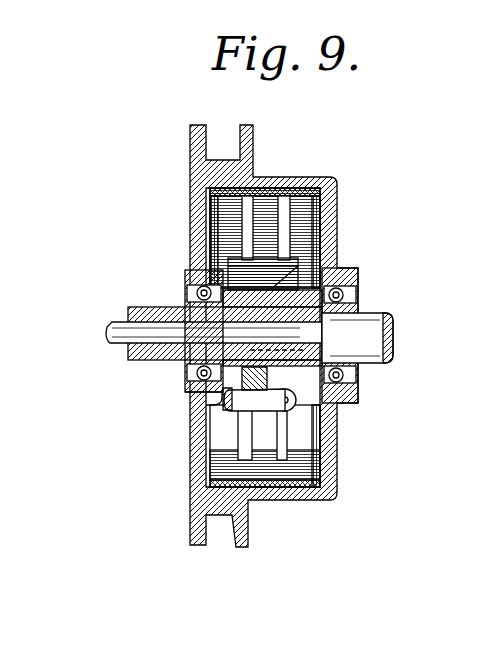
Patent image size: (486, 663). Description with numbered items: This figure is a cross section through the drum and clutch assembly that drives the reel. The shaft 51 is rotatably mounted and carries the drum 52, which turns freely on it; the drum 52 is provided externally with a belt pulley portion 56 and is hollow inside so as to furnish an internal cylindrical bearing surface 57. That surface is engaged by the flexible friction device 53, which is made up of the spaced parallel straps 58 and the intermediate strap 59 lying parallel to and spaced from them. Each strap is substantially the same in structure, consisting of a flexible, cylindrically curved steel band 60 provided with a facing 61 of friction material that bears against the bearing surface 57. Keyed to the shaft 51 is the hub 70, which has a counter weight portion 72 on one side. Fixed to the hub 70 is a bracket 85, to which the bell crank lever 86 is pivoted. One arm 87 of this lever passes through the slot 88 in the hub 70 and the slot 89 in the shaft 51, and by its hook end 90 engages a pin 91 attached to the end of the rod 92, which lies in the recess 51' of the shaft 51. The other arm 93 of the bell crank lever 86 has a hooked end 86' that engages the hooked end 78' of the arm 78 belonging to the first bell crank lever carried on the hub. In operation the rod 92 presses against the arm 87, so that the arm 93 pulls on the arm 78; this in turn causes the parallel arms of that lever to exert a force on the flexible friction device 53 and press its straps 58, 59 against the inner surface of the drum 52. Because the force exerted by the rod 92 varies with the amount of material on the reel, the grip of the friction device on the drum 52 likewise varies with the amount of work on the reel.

The shaft 51 is at (388, 336).
The recess of shaft 51' is at (214, 306).
The drum 52 is at (314, 492).
The flexible friction device 53 is at (277, 188).
The belt pulley portion 56 is at (222, 160).
The internal cylindrical bearing surface 57 is at (273, 502).
The spaced parallel straps 58 is at (206, 478).
The intermediate strap 59 is at (337, 466).
The steel bands 60 is at (232, 232).
The facings 61 is at (312, 190).
The hub 70 is at (338, 236).
The counter weight portion 72 is at (240, 270).
The arm 78 is at (158, 396).
The hooked end of arm 78' is at (169, 428).
The bracket 85 is at (297, 398).
The bell crank lever 86 is at (361, 436).
The hooked end 86' is at (157, 420).
The arm 87 is at (358, 362).
The slot of hub 88 is at (350, 355).
The slot of shaft 89 is at (360, 314).
The hook end 90 is at (340, 270).
The pin 91 is at (354, 301).
The rod 92 is at (122, 346).
The arm 93 is at (250, 404).